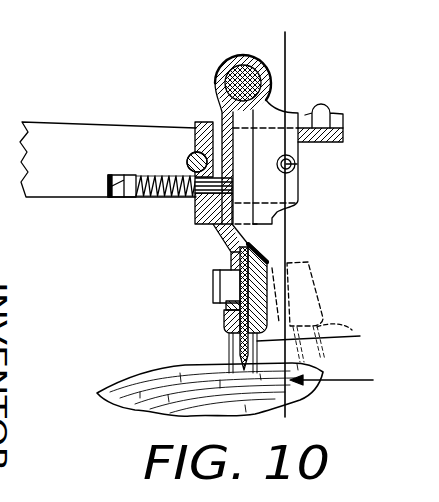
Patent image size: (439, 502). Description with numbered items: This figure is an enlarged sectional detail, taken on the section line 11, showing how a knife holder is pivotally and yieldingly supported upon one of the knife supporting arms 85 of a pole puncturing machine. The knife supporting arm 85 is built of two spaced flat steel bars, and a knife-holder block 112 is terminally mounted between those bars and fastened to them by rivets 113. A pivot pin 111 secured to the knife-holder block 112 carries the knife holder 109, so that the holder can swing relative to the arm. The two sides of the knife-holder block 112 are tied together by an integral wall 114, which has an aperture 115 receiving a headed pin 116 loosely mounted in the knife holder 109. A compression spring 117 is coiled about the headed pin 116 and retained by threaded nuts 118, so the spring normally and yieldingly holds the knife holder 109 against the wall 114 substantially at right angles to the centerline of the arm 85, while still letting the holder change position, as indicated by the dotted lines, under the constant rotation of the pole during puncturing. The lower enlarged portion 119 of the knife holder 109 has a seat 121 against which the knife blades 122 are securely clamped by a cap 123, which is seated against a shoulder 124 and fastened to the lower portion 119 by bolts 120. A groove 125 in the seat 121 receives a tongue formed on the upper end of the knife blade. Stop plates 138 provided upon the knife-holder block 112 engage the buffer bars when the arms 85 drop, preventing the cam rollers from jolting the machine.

The section line 11— 11 is at (340, 209).
The knife supporting arm 85 is at (72, 84).
The knife holder 109 is at (223, 233).
The pivot pin 111 is at (232, 78).
The knife-holder block 112 is at (278, 100).
The rivets 113 is at (194, 153).
The integral wall 114 is at (200, 121).
The aperture 115 is at (212, 197).
The headed pin 116 is at (109, 177).
The compression spring 117 is at (135, 197).
The threaded nuts 118 is at (108, 197).
The lower enlarged portion 119 is at (229, 333).
The bolts 120 is at (213, 288).
The seat 121 is at (225, 325).
The knife blades 122 is at (323, 336).
The cap 123 is at (268, 273).
The shoulder 124 is at (258, 250).
The groove 125 is at (230, 308).
The stop plates 138 is at (345, 136).